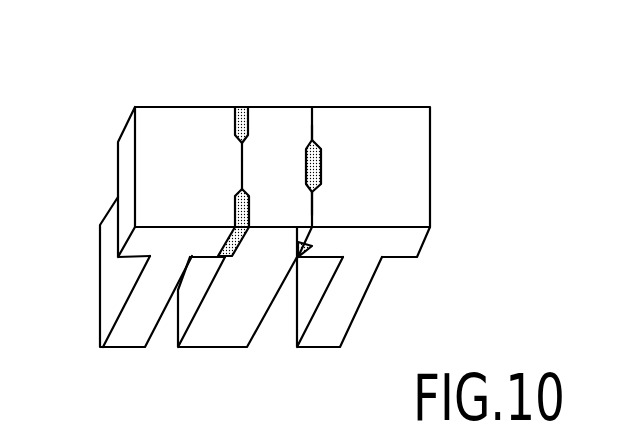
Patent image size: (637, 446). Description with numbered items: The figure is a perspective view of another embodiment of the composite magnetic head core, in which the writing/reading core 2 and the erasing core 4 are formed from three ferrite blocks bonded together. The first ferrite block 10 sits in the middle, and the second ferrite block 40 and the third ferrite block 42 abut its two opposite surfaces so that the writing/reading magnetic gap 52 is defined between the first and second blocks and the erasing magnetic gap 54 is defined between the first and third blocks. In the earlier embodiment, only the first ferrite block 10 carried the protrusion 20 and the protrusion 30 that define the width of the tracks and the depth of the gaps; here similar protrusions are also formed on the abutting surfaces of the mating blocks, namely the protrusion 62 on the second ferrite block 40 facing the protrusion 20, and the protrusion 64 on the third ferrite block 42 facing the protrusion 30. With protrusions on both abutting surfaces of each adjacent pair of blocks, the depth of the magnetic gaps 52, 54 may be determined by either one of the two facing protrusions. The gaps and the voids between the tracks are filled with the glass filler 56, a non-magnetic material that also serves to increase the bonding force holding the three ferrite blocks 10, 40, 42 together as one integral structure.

The writing/reading core 2 is at (153, 87).
The erasing core 4 is at (424, 94).
The first ferrite block 10 is at (221, 333).
The protrusion 20 is at (244, 158).
The protrusion 30 is at (310, 128).
The second ferrite block 40 is at (126, 334).
The third ferrite block 42 is at (322, 333).
The writing/reading magnetic gap 52 is at (240, 169).
The erasing magnetic gap 54 is at (318, 198).
The glass filler 56 is at (236, 212).
The protrusion 62 is at (237, 153).
The protrusion 64 is at (320, 129).